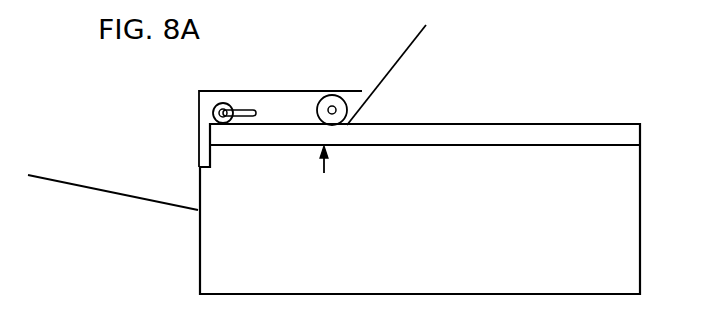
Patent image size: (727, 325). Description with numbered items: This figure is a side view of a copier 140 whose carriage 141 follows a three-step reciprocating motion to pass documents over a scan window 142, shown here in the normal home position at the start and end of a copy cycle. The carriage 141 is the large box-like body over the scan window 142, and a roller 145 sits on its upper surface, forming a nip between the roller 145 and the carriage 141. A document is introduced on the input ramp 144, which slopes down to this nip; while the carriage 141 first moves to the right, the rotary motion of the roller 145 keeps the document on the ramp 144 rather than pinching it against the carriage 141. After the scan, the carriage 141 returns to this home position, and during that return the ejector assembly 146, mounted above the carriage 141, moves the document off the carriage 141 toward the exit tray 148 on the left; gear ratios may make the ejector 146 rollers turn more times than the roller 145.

The copier 140 is at (633, 225).
The carriage 141 is at (470, 132).
The scan window 142 is at (324, 169).
The input ramp 144 is at (393, 63).
The roller 145 is at (327, 100).
The ejector assembly 146 is at (238, 103).
The exit tray 148 is at (83, 185).